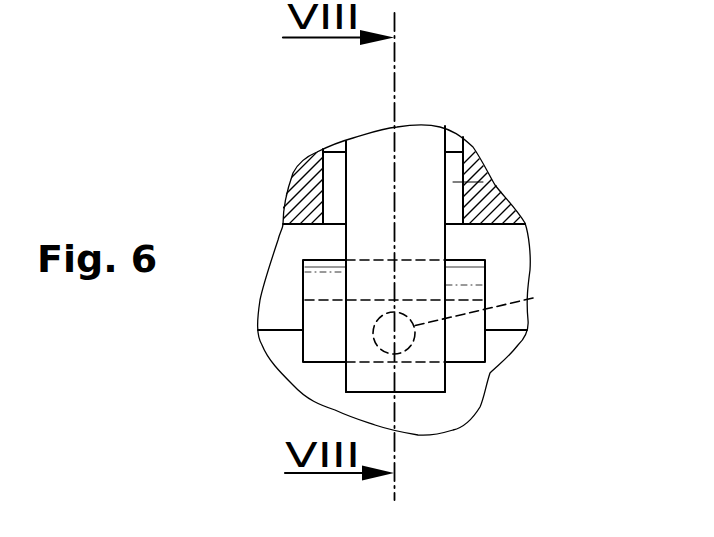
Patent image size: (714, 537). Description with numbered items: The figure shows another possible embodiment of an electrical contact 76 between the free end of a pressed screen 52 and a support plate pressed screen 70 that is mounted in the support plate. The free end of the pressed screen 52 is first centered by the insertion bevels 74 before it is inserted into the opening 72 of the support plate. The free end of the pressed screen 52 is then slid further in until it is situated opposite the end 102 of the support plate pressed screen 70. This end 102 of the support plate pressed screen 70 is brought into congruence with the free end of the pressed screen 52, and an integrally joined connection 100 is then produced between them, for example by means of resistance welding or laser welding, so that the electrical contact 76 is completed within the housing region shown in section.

The pressed screen 52 is at (372, 163).
The support plate pressed screen 70 is at (505, 253).
The opening of the support plate 72 is at (493, 173).
The insertion bevel 74 is at (470, 150).
The electrical contact 76 is at (440, 341).
The integrally joined connection 100 is at (533, 298).
The end of the support plate pressed screen 102 is at (330, 318).